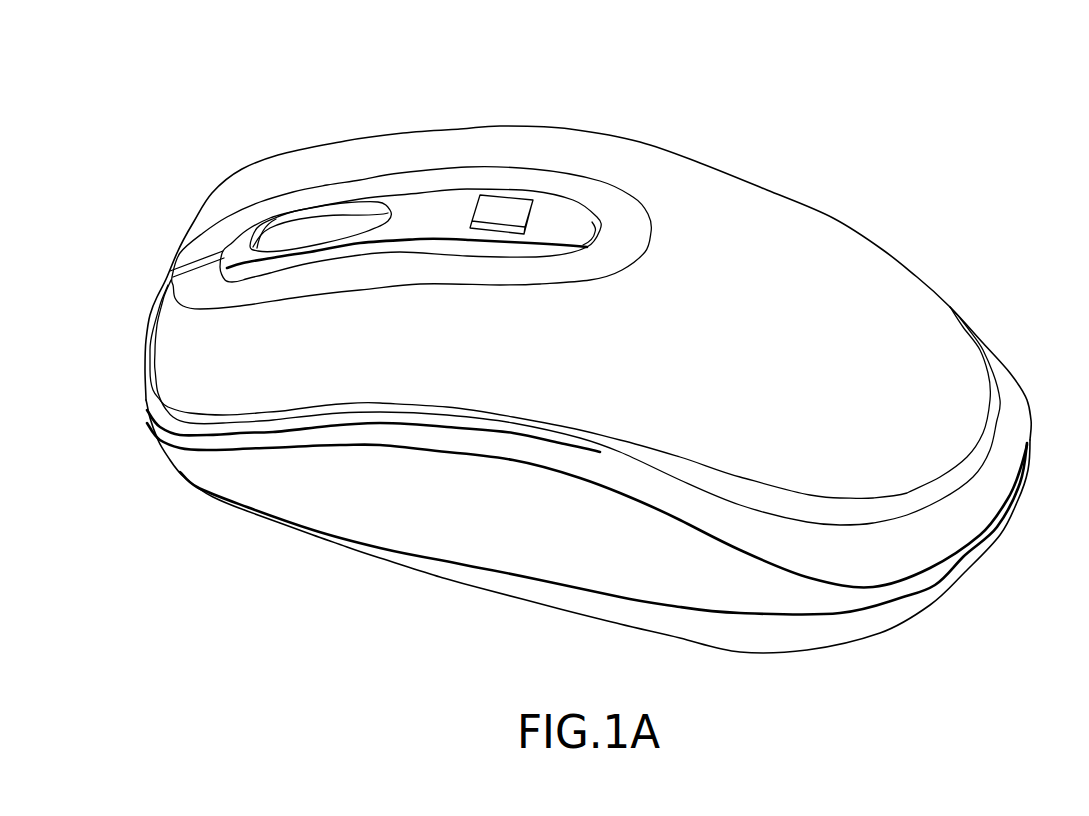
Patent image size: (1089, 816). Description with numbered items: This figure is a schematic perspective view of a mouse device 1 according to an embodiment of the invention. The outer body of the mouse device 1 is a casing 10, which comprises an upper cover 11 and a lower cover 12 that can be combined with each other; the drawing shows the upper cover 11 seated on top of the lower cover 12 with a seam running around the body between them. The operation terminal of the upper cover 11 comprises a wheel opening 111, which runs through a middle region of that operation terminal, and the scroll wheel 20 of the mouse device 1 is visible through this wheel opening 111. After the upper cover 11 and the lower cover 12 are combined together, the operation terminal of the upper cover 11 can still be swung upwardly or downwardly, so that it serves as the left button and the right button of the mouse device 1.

The mouse device 1 is at (313, 69).
The casing 10 is at (942, 151).
The upper cover 11 is at (740, 195).
The lower cover 12 is at (518, 552).
The wheel opening 111 is at (387, 192).
The scroll wheel 20 is at (297, 217).